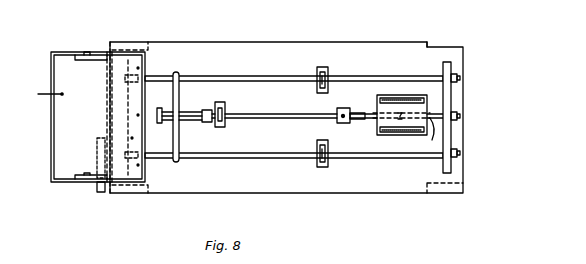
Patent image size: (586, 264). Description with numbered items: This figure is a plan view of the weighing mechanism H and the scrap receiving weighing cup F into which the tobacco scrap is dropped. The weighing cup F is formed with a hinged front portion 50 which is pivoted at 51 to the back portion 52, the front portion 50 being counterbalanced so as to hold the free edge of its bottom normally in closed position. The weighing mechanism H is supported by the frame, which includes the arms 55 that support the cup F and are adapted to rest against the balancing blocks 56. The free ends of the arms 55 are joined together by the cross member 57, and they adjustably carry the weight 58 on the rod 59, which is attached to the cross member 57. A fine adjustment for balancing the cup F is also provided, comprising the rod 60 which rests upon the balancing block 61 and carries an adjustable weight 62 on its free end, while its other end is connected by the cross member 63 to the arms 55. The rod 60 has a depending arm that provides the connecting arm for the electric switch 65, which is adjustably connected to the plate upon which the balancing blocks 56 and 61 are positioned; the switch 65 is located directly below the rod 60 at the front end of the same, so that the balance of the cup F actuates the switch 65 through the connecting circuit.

The hinged front portion 50 is at (54, 52).
The pivot 51 is at (88, 184).
The back portion 52 is at (115, 52).
The arms 55 is at (200, 76).
The balancing blocks 56 is at (318, 93).
The cross member 57 is at (451, 98).
The weight 58 is at (377, 102).
The rod 59 is at (419, 136).
The rod 60 is at (265, 119).
The balancing block 61 is at (220, 103).
The adjustable weight 62 is at (343, 123).
The cross member 63 is at (180, 95).
The electric switch 65 is at (197, 125).
The weighing cup F is at (41, 94).
The weighing mechanism H is at (275, 177).